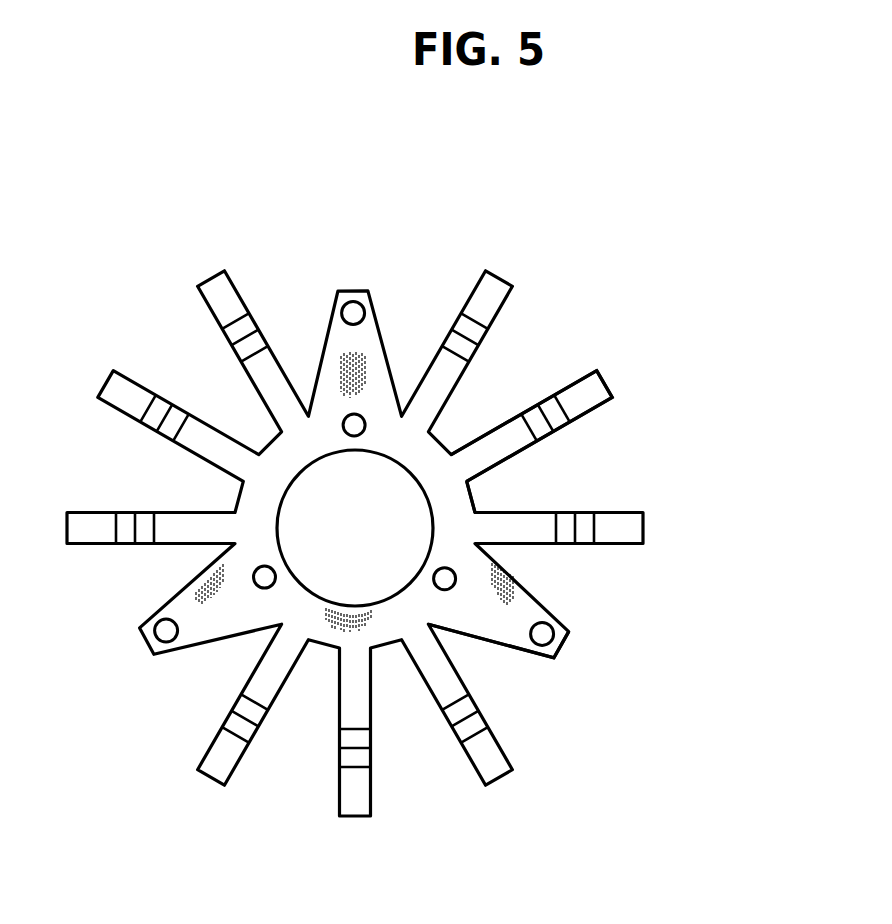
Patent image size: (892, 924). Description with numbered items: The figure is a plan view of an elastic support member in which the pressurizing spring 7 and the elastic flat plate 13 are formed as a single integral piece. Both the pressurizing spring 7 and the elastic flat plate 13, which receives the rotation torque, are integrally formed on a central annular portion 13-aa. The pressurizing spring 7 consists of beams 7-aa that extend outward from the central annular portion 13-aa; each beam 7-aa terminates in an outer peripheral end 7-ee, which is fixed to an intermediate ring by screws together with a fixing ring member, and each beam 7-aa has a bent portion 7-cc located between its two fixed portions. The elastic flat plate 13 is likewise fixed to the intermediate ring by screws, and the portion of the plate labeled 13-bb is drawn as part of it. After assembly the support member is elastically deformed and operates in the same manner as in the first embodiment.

The bent portion 7-cc is at (528, 413).
The beam 7-aa is at (566, 392).
The outer peripheral end 7-ee is at (598, 385).
The pressurizing spring 7 is at (784, 184).
The central annular portion 13-aa is at (461, 507).
The elastic flat plate 13 is at (514, 601).
The yoke mounting hole 13-bb is at (554, 631).